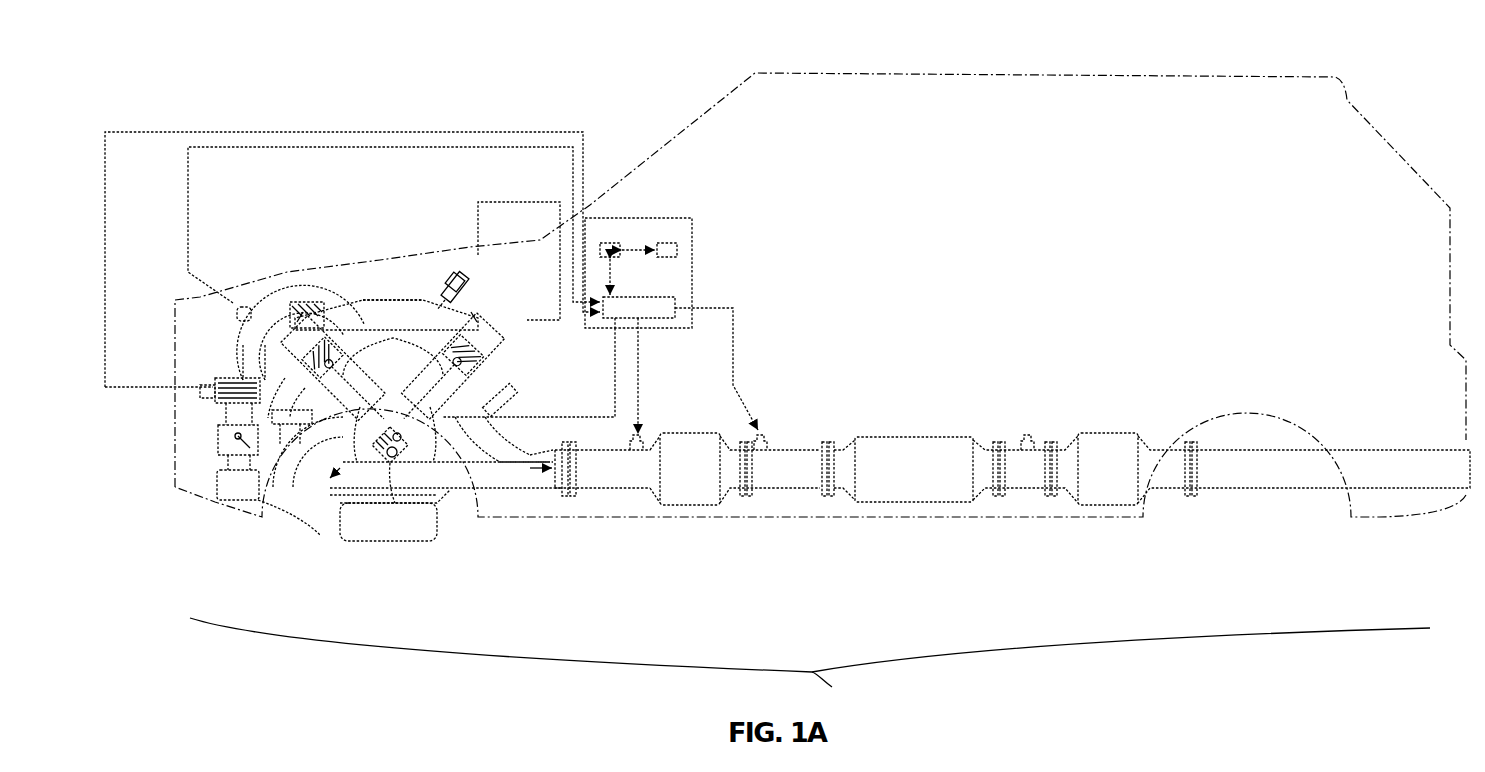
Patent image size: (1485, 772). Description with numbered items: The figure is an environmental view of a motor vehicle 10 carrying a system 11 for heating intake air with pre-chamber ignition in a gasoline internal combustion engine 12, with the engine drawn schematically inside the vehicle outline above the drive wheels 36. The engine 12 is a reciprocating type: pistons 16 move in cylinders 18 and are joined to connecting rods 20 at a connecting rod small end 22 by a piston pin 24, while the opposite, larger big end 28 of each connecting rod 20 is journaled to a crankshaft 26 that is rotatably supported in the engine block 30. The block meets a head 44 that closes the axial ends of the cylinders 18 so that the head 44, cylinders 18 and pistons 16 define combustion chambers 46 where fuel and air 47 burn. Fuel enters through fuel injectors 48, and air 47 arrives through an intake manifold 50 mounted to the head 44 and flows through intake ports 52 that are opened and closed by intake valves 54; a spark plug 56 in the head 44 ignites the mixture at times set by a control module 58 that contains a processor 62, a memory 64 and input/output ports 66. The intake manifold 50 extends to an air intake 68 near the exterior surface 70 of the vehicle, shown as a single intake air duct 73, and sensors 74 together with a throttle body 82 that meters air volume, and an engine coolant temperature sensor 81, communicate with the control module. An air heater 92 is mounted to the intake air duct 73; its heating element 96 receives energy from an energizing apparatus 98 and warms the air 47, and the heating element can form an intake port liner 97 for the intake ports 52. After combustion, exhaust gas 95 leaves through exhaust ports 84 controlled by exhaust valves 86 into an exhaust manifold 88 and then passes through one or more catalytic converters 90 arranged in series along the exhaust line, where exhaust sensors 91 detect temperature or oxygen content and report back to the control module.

The motor vehicle 10 is at (858, 72).
The system for heating intake air with pre-chamber ignition 11 is at (810, 662).
The internal combustion engine 12 is at (388, 297).
The piston 16 is at (423, 316).
The cylinder 18 is at (390, 432).
The connecting rod 20 is at (346, 513).
The connecting rod small end 22 is at (490, 362).
The piston pin 24 is at (385, 298).
The crankshaft 26 is at (420, 500).
The connecting rod big end 28 is at (334, 481).
The engine block 30 is at (323, 480).
The drive wheels 36 is at (303, 606).
The head 44 is at (500, 357).
The combustion chamber 46 is at (490, 332).
The air 47 is at (337, 307).
The fuel injector 48 is at (453, 268).
The intake manifold 50 is at (391, 292).
The intake port 52 is at (306, 320).
The intake valve 54 is at (289, 325).
The spark plug 56 is at (490, 317).
The control module 58 is at (693, 268).
The processor 62 is at (612, 243).
The memory 64 is at (668, 243).
The input/output ports 66 is at (648, 332).
The air intake 68 is at (240, 502).
The exterior surface 70 is at (166, 486).
The intake air duct 73 is at (194, 296).
The sensor 74 is at (236, 303).
The engine coolant temperature sensor 81 is at (513, 447).
The throttle body 82 is at (218, 442).
The exhaust port 84 is at (278, 320).
The exhaust valve 86 is at (246, 306).
The exhaust manifold 88 is at (492, 368).
The catalytic converter 90 is at (688, 507).
The exhaust sensor 91 is at (752, 432).
The air heater 92 is at (213, 386).
The exhaust gas 95 is at (337, 483).
The heating element 96 is at (218, 414).
The intake port liner 97 is at (302, 328).
The energizing apparatus 98 is at (205, 393).